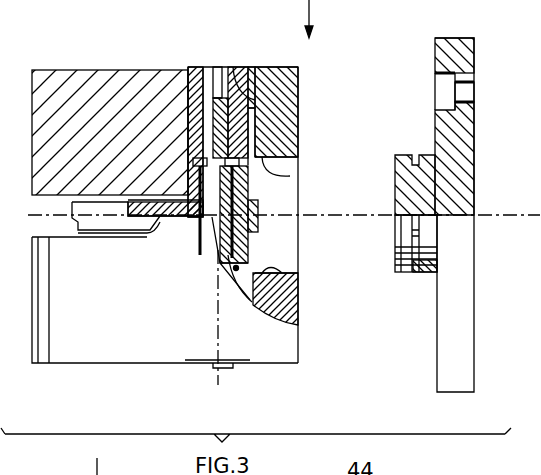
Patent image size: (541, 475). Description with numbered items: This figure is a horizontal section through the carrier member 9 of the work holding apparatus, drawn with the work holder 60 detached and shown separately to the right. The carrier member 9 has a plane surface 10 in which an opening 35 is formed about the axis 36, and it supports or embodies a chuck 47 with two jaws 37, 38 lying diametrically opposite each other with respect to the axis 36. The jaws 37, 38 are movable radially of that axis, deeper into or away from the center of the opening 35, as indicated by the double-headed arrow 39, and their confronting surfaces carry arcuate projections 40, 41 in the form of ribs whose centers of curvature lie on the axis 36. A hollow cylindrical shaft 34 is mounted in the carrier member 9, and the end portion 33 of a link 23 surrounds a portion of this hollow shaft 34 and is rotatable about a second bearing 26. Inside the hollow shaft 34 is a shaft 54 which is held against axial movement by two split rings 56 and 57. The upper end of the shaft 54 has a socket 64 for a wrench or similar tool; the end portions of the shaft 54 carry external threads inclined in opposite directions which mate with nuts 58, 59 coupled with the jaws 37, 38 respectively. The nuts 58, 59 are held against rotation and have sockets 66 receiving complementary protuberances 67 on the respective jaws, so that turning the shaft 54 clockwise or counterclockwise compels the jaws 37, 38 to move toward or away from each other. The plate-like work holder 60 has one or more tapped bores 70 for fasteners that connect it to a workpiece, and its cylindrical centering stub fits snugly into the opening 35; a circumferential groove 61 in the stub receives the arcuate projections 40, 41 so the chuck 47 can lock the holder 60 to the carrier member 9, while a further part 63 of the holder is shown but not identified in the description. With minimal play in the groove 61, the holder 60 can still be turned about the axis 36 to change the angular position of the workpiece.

The carrier member 9 is at (71, 97).
The plane surface 10 is at (299, 343).
The link 23 is at (160, 200).
The second bearing 26 is at (222, 367).
The end portion of the link 33 is at (253, 228).
The hollow cylindrical shaft 34 is at (187, 175).
The opening 35 is at (282, 168).
The axis 36 is at (299, 222).
The jaw 37 is at (287, 100).
The jaw 38 is at (297, 305).
The double-headed arrow 39 is at (310, 4).
The arcuate projection 40 is at (299, 188).
The arcuate projection 41 is at (290, 268).
The chuck 47 is at (298, 157).
The shaft 54 is at (198, 68).
The split ring 56 is at (202, 217).
The split ring 57 is at (232, 268).
The nut 58 is at (237, 67).
The nut 59 is at (242, 292).
The work holder 60 is at (465, 62).
The circumferential groove 61 is at (413, 167).
The rim 63 is at (425, 272).
The socket 64 is at (218, 67).
The socket 66 is at (243, 92).
The protuberance 67 is at (252, 98).
The tapped bore 70 is at (468, 93).